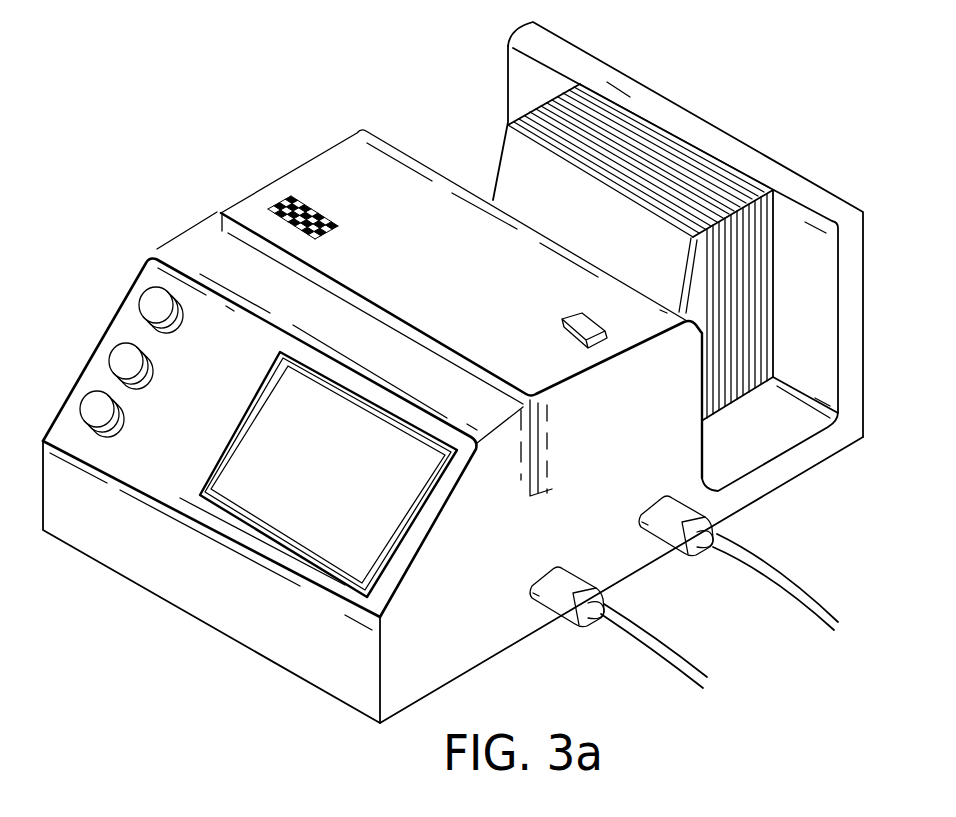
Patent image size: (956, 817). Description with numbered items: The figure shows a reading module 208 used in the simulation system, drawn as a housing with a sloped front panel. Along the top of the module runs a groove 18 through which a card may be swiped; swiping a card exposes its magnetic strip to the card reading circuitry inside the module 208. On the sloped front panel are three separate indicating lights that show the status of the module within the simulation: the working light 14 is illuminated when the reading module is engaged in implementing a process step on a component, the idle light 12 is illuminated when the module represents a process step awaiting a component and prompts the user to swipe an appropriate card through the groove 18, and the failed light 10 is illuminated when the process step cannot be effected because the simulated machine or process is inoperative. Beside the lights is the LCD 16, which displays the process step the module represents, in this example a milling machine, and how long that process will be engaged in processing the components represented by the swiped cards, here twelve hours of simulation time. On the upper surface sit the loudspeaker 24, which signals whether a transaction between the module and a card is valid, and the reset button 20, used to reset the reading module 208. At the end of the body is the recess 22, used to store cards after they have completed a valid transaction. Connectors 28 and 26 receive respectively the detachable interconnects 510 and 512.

The failed light 10 is at (120, 417).
The idle light 12 is at (150, 353).
The working light 14 is at (153, 298).
The LCD 16 is at (397, 522).
The groove 18 is at (213, 218).
The reset button 20 is at (578, 313).
The recess 22 is at (733, 450).
The loudspeaker 24 is at (330, 217).
The connector 26 is at (707, 513).
The connector 28 is at (548, 610).
The reading module 208 is at (313, 152).
The interconnect 510 is at (665, 672).
The interconnect 512 is at (778, 588).